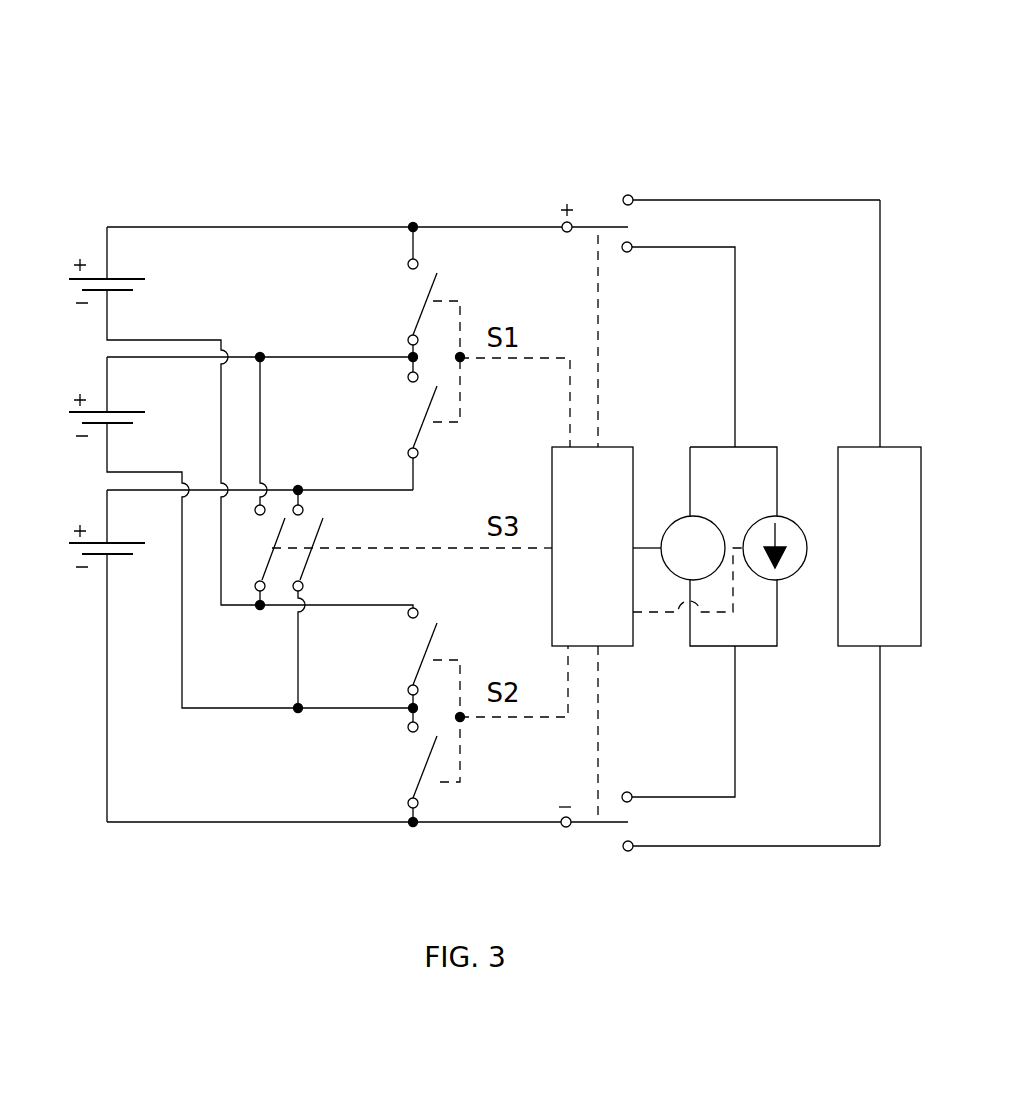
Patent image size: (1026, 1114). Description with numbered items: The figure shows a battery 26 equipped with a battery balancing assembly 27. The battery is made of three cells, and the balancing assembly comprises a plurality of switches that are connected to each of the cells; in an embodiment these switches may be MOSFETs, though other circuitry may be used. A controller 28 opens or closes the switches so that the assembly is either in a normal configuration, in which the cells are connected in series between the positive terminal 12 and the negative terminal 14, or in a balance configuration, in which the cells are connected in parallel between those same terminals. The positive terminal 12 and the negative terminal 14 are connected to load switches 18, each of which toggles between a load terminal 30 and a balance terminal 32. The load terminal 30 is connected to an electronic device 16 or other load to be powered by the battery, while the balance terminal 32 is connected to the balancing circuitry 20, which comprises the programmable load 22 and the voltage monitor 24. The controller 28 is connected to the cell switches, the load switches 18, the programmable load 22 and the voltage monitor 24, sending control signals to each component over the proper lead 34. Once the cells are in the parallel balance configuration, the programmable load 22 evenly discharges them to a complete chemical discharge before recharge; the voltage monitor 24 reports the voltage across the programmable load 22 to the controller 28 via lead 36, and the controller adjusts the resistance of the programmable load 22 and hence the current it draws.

The positive terminal 12 is at (563, 224).
The negative terminal 14 is at (562, 819).
The electronic device 16 is at (867, 561).
The load switch 18 is at (606, 213).
The balancing circuitry 20 is at (757, 447).
The programmable load 22 is at (789, 521).
The voltage monitor 24 is at (700, 517).
The battery 26 is at (150, 153).
The battery balancing assembly 27 is at (640, 124).
The controller 28 is at (606, 561).
The load terminal 30 is at (632, 197).
The balance terminal 32 is at (631, 252).
The lead 34 is at (545, 357).
The lead 36 is at (650, 548).